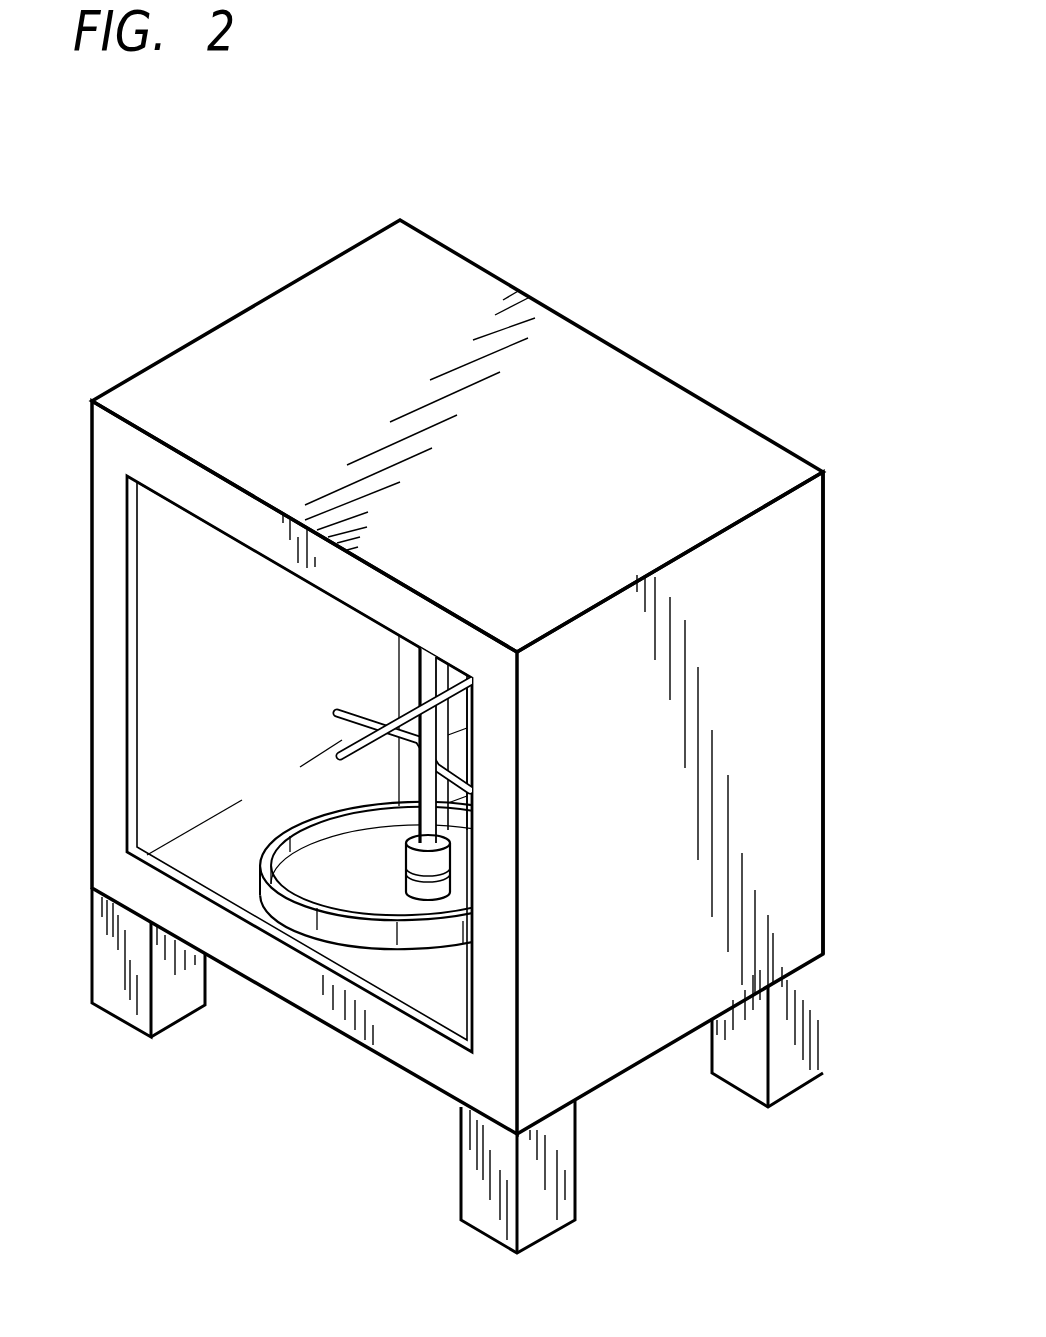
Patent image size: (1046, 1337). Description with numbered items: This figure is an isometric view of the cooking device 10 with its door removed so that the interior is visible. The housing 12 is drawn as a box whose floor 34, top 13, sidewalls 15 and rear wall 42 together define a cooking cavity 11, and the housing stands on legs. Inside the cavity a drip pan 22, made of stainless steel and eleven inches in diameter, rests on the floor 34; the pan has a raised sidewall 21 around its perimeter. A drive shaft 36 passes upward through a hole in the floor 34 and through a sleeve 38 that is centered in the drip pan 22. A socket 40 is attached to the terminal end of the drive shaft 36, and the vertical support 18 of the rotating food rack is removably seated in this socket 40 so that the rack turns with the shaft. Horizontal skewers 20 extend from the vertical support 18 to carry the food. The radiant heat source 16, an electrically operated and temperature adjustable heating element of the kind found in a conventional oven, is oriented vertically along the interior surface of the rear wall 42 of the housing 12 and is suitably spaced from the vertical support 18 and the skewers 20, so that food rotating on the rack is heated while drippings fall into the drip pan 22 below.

The cooking device 10 is at (697, 128).
The cooking cavity 11 is at (273, 611).
The housing unit 12 is at (752, 426).
The top 13 is at (407, 317).
The sidewalls 15 is at (160, 580).
The radiant heat source 16 is at (470, 727).
The vertical support 18 is at (425, 683).
The horizontal skewers 20 is at (340, 740).
The raised sidewall 21 is at (403, 938).
The drip pan 22 is at (322, 812).
The floor 34 is at (450, 1005).
The drive shaft 36 is at (452, 873).
The sleeve 38 is at (445, 895).
The socket 40 is at (443, 850).
The rear wall 42 is at (826, 682).